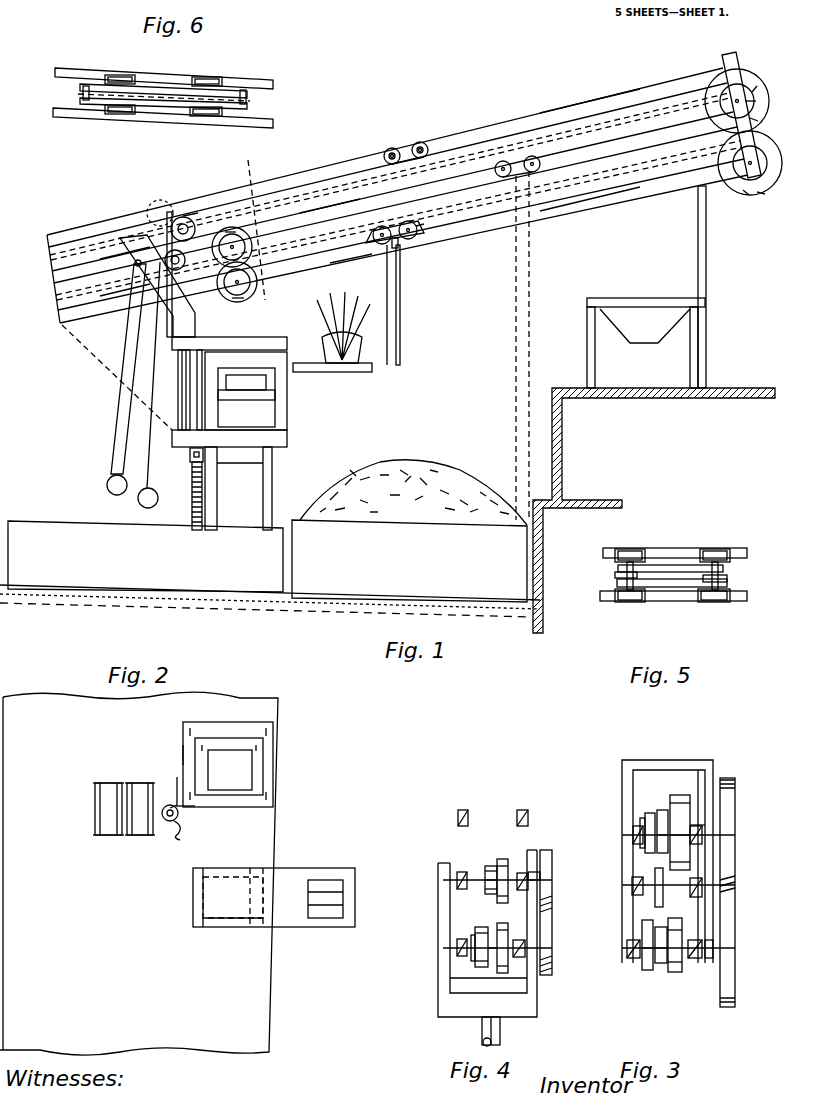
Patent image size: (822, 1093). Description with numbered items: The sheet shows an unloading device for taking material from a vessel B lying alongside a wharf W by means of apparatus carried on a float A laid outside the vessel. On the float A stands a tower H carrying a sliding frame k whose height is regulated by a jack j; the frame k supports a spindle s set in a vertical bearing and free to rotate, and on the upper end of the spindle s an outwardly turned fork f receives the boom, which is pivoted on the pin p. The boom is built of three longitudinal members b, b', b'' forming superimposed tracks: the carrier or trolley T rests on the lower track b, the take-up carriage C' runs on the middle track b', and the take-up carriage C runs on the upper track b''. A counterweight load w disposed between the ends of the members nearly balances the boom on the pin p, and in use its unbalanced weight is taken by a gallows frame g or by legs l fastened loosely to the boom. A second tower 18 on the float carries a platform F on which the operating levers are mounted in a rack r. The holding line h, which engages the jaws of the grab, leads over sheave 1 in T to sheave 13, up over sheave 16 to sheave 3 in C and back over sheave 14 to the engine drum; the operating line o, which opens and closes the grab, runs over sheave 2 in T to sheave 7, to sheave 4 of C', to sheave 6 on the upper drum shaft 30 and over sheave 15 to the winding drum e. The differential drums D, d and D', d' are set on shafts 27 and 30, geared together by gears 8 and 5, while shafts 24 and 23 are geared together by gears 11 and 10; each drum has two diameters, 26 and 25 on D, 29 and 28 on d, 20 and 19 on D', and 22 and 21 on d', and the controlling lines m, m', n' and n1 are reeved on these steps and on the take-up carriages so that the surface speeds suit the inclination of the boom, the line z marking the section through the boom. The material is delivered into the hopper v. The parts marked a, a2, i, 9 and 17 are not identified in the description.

In FIG. 1, the float A is at (270, 569).
In FIG. 2, the float A is at (139, 873).
In FIG. 1, the vessel B is at (409, 531).
In FIG. 1, the take-up carriage C is at (406, 142).
In FIG. 5, the take-up carriage C is at (672, 557).
In FIG. 1, the take-up carriage C' is at (517, 133).
In FIG. 1, the differential drum D is at (751, 159).
In FIG. 3, the differential drum D is at (667, 893).
In FIG. 1, the differential drum D' is at (234, 291).
In FIG. 4, the differential drum D' is at (463, 940).
In FIG. 1, the platform F is at (332, 379).
In FIG. 2, the platform F is at (274, 897).
In FIG. 1, the tower H is at (218, 493).
In FIG. 2, the tower H is at (228, 764).
In FIG. 1, the trolley carriage T is at (396, 248).
In FIG. 6, the trolley carriage T is at (172, 86).
In FIG. 1, the wharf W is at (654, 510).
In FIG. 1, the trolley rollers a is at (386, 244).
In FIG. 6, the trolley rollers a is at (120, 76).
In FIG. 1, the trolley roller a2 is at (418, 240).
In FIG. 1, the longitudinal member b is at (393, 247).
In FIG. 6, the longitudinal member b is at (174, 103).
In FIG. 4, the longitudinal member b is at (485, 937).
In FIG. 3, the longitudinal member b is at (662, 951).
In FIG. 1, the longitudinal member b' is at (384, 204).
In FIG. 4, the longitudinal member b' is at (487, 869).
In FIG. 3, the longitudinal member b' is at (662, 887).
In FIG. 1, the longitudinal member b'' is at (377, 163).
In FIG. 5, the longitudinal member b'' is at (659, 571).
In FIG. 4, the longitudinal member b'' is at (492, 805).
In FIG. 3, the longitudinal member b'' is at (662, 834).
In FIG. 1, the differential drum d is at (737, 114).
In FIG. 3, the differential drum d is at (667, 796).
In FIG. 1, the differential drum d' is at (225, 247).
In FIG. 4, the differential drum d' is at (482, 872).
In FIG. 1, the winding drum e is at (132, 491).
In FIG. 2, the winding drum e is at (124, 809).
In FIG. 1, the fork f is at (157, 286).
In FIG. 4, the fork f is at (537, 1010).
In FIG. 1, the gallows frame g is at (706, 270).
In FIG. 1, the holding line h is at (116, 438).
In FIG. 1, the carriage rollers i is at (384, 156).
In FIG. 5, the carriage rollers i is at (635, 549).
In FIG. 1, the jack j is at (192, 486).
In FIG. 1, the sliding frame k is at (287, 439).
In FIG. 2, the sliding frame k is at (183, 758).
In FIG. 1, the legs l is at (526, 338).
In FIG. 1, the controlling line m is at (590, 215).
In FIG. 1, the controlling line m' is at (590, 105).
In FIG. 1, the controlling line n' is at (330, 204).
In FIG. 1, the controlling line n1 is at (351, 269).
In FIG. 1, the operating line o is at (406, 338).
In FIG. 1, the pin p is at (134, 250).
In FIG. 1, the rack r is at (325, 342).
In FIG. 2, the rack r is at (333, 927).
In FIG. 1, the spindle s is at (178, 383).
In FIG. 2, the spindle s is at (178, 814).
In FIG. 4, the spindle s is at (482, 1031).
In FIG. 1, the hopper v is at (646, 343).
In FIG. 1, the counterweight load w is at (116, 276).
In FIG. 1, the section line z is at (396, 203).
In FIG. 6, the sheave 1 is at (78, 94).
In FIG. 6, the sheave 2 is at (250, 101).
In FIG. 1, the sheave 3 is at (387, 150).
In FIG. 5, the sheave 3 is at (615, 575).
In FIG. 1, the sheave 4 is at (422, 143).
In FIG. 5, the sheave 4 is at (727, 580).
In FIG. 1, the gear 5 is at (757, 86).
In FIG. 3, the gear 5 is at (735, 835).
In FIG. 1, the sheave 6 is at (756, 101).
In FIG. 3, the sheave 6 is at (648, 825).
In FIG. 1, the sheave 7 is at (758, 120).
In FIG. 3, the sheave 7 is at (665, 890).
In FIG. 1, the gear 8 is at (764, 193).
In FIG. 3, the gear 8 is at (735, 965).
In FIG. 1, the pulley 9 is at (747, 194).
In FIG. 4, the pulley 9 is at (474, 960).
In FIG. 3, the pulley 9 is at (645, 968).
In FIG. 1, the gear 10 is at (236, 229).
In FIG. 4, the gear 10 is at (552, 899).
In FIG. 1, the gear 11 is at (238, 300).
In FIG. 4, the gear 11 is at (552, 961).
In FIG. 1, the sheave 13 is at (176, 268).
In FIG. 1, the sheave 14 is at (160, 200).
In FIG. 1, the sheave 15 is at (183, 216).
In FIG. 1, the sheave 16 is at (190, 210).
In FIG. 1, the cord 17 is at (103, 363).
In FIG. 2, the tower 18 is at (221, 927).
In FIG. 4, the drum part 19 is at (480, 978).
In FIG. 4, the drum part 20 is at (483, 925).
In FIG. 4, the drum part 21 is at (488, 865).
In FIG. 4, the drum part 22 is at (502, 858).
In FIG. 4, the shaft 23 is at (528, 870).
In FIG. 4, the shaft 24 is at (498, 975).
In FIG. 3, the drum part 25 is at (660, 970).
In FIG. 3, the drum part 26 is at (676, 975).
In FIG. 3, the shaft 27 is at (716, 965).
In FIG. 3, the drum part 28 is at (660, 818).
In FIG. 3, the drum part 29 is at (680, 800).
In FIG. 3, the upper drum shaft 30 is at (700, 790).